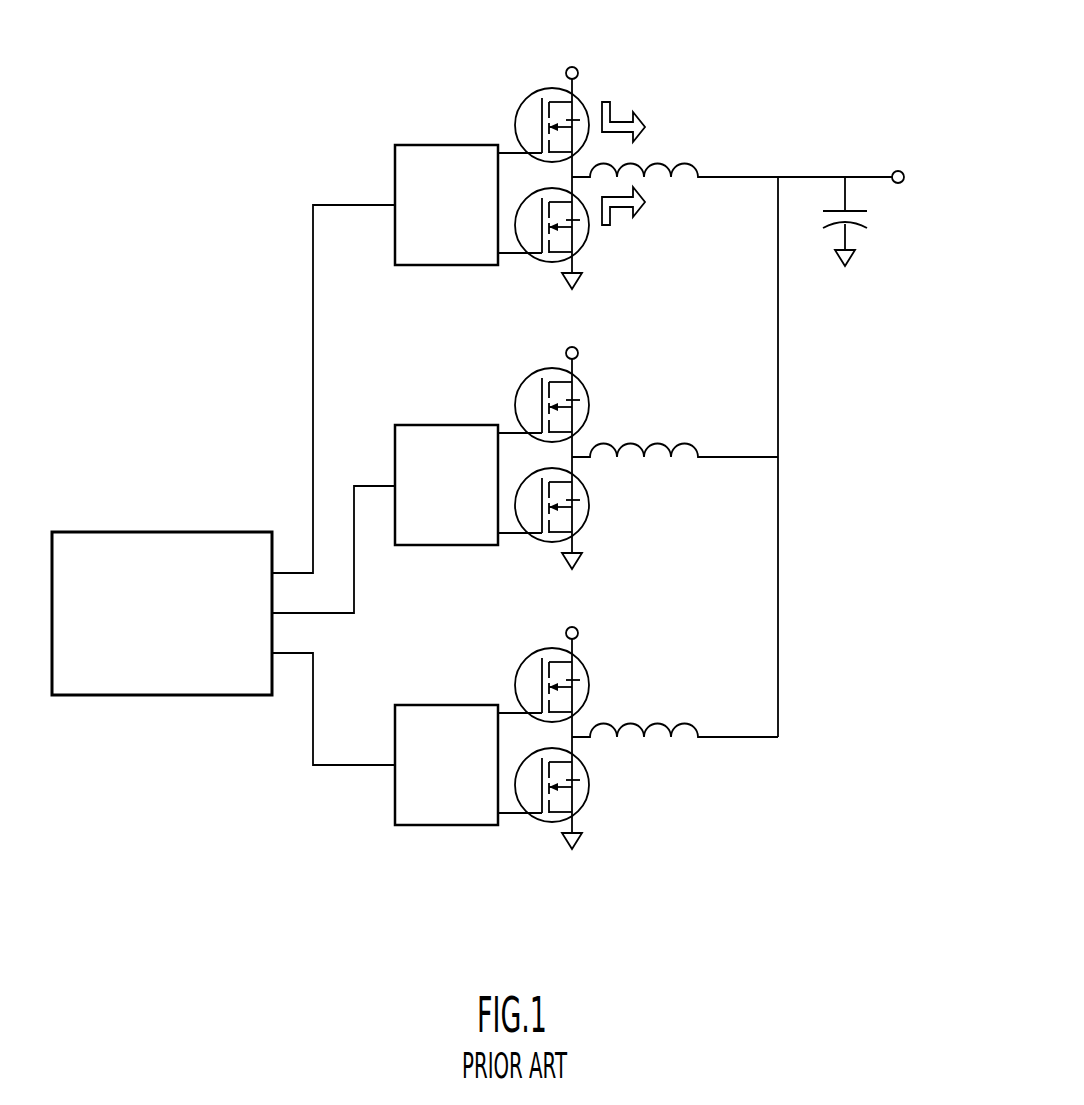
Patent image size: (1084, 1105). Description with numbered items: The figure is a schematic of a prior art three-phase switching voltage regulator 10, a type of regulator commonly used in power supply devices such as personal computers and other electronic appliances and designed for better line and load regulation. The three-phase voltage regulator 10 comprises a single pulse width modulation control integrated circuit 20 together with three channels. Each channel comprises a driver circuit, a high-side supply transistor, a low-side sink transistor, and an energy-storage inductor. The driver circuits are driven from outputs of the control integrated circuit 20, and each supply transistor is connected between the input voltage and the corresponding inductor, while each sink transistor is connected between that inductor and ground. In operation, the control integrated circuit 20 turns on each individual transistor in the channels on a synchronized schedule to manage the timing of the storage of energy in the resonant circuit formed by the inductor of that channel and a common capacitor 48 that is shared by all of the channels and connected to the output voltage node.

The three-phase voltage regulator 10 is at (211, 237).
The pulse width modulation control integrated circuit 20 is at (163, 532).
The common capacitor 48 is at (870, 220).